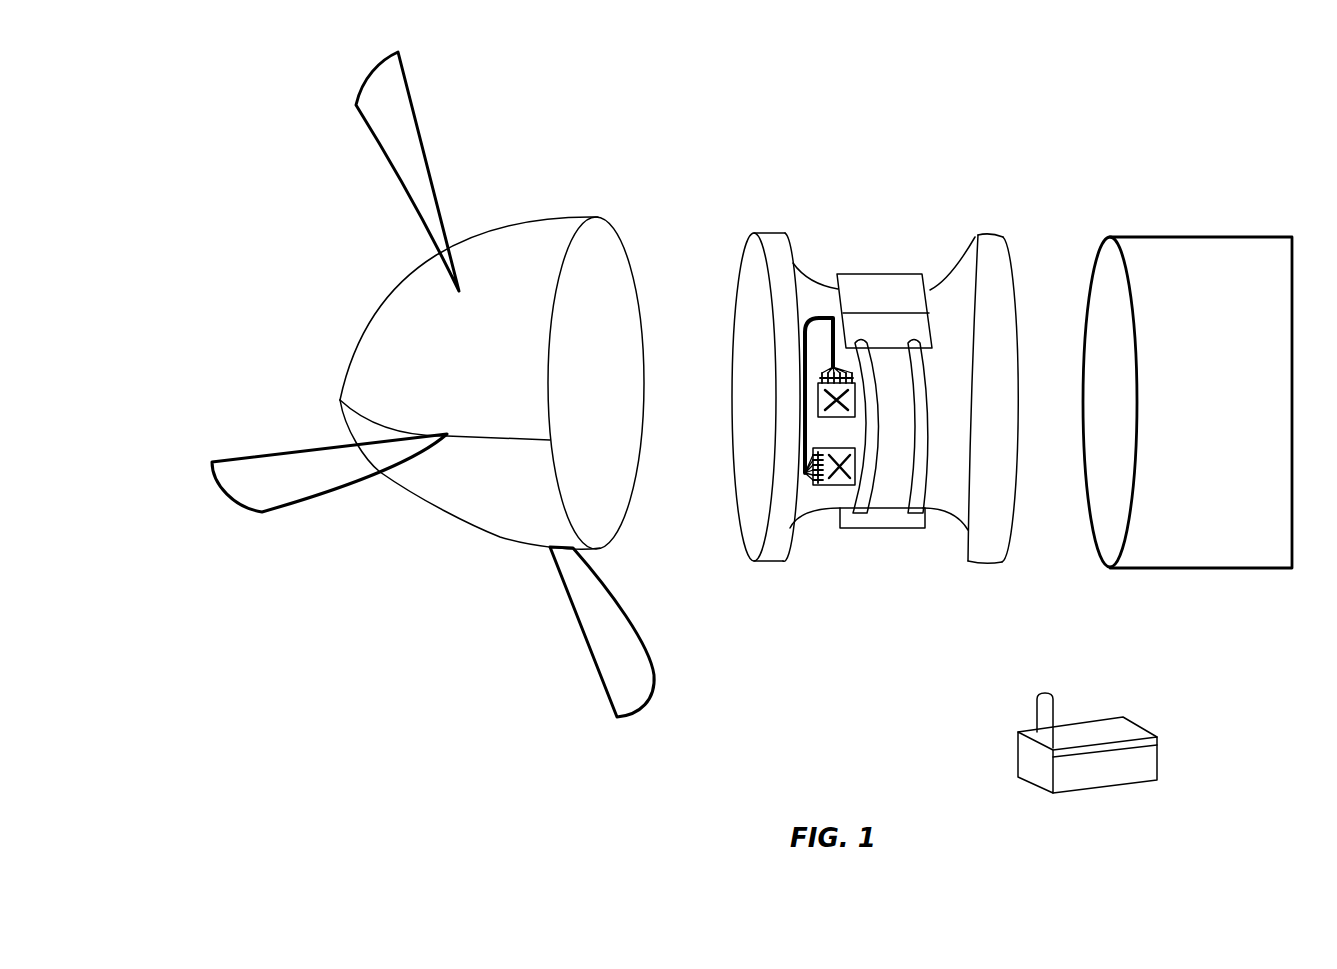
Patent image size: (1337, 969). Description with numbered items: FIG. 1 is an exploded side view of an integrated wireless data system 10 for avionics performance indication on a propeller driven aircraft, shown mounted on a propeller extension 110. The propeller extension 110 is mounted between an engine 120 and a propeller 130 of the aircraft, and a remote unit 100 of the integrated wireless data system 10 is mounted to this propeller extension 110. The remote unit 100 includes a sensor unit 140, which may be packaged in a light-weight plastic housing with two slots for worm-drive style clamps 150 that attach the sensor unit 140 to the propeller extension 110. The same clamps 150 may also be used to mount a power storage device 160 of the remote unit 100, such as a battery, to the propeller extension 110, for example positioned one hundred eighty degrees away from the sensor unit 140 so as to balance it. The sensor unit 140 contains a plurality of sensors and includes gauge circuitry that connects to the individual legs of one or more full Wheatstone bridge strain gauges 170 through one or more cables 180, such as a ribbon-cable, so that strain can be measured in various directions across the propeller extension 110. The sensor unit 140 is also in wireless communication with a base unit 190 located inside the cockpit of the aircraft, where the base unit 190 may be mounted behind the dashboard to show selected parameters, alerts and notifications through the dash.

The integrated wireless data system 10 is at (865, 672).
The remote unit 100 is at (803, 207).
The propeller extension 110 is at (954, 258).
The engine 120 is at (1153, 230).
The propeller 130 is at (598, 198).
The sensor unit 140 is at (874, 264).
The worm-drive style clamps 150 is at (917, 438).
The power storage device 160 is at (893, 530).
The full Wheatstone bridge strain gauges 170 is at (821, 418).
The cables 180 is at (834, 316).
The base unit 190 is at (1092, 716).